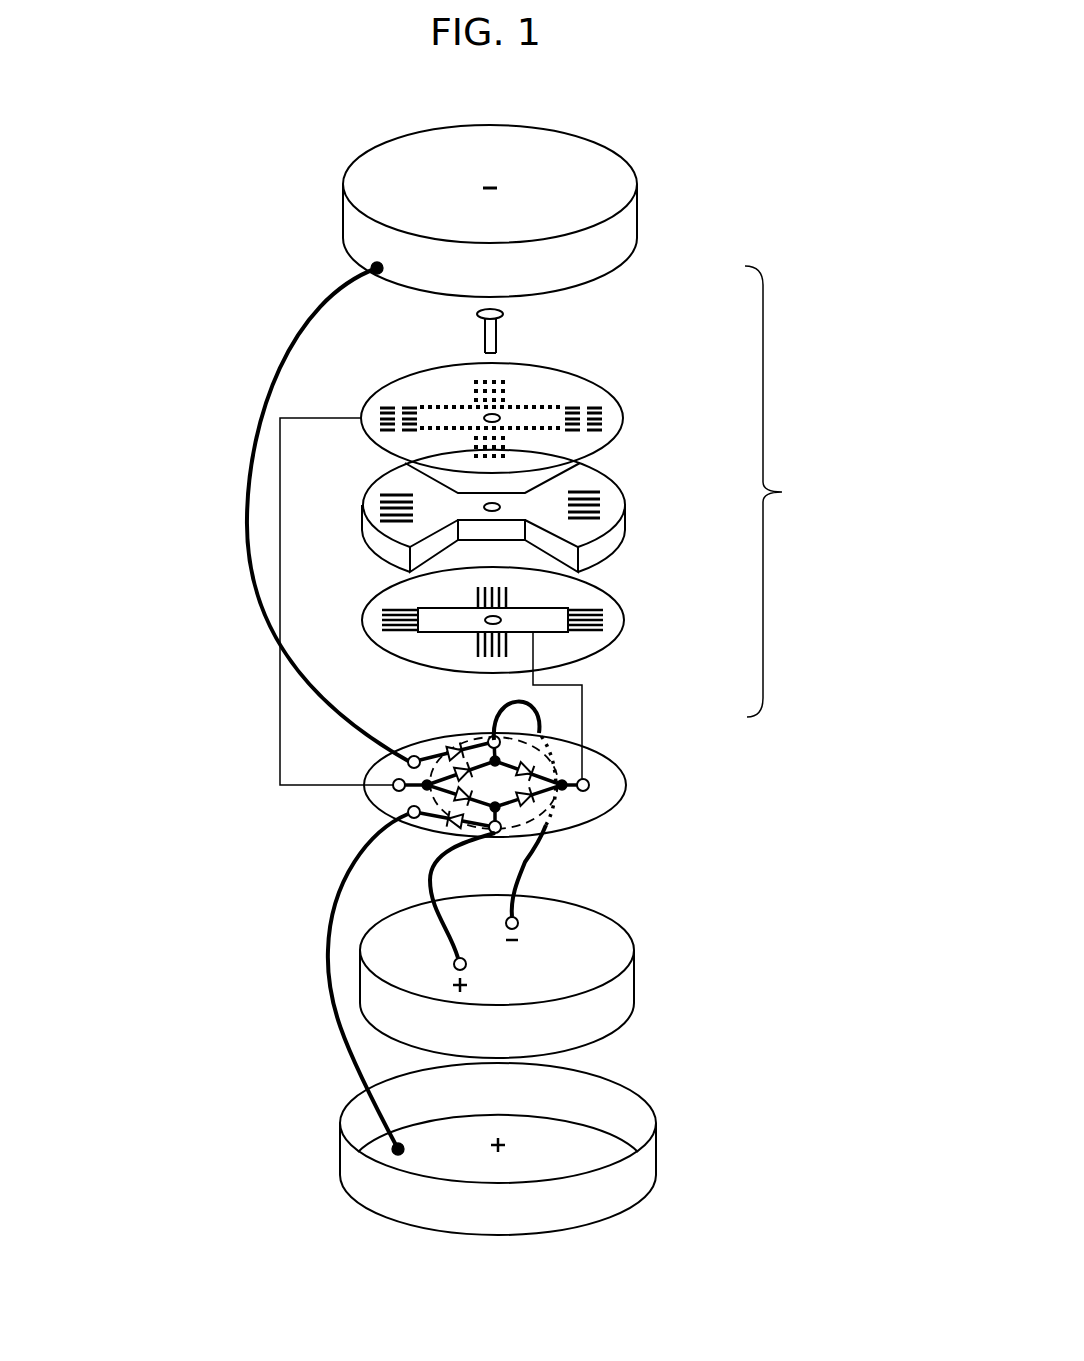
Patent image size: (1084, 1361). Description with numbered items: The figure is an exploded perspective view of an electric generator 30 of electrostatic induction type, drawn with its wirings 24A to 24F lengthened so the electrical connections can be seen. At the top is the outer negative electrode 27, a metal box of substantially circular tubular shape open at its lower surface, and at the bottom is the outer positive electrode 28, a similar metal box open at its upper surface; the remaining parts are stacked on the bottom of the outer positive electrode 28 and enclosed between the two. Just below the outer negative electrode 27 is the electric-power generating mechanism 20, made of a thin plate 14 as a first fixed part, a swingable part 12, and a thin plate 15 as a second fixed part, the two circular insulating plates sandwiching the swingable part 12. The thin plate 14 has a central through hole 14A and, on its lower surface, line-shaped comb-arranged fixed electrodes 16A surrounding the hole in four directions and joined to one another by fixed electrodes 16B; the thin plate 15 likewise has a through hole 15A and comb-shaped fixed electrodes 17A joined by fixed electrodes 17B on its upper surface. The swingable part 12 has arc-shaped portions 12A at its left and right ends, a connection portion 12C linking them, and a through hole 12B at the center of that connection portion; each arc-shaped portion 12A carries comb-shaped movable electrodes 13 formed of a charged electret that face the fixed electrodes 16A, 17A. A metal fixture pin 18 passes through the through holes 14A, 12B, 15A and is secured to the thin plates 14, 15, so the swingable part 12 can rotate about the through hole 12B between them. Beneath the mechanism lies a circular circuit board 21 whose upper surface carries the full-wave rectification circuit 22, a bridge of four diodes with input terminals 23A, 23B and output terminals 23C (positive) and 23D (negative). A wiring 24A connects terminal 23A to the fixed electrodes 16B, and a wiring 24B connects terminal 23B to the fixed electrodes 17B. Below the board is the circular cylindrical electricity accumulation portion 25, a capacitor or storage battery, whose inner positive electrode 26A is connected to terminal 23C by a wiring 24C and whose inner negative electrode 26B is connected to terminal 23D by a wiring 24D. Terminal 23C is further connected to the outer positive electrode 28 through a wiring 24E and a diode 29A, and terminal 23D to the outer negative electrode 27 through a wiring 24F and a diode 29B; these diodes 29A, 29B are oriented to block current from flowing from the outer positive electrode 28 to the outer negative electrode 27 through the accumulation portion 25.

The electric generator 30 is at (677, 100).
The outer negative electrode 27 is at (627, 162).
The fixture pin 18 is at (497, 334).
The thin plate 14 is at (625, 417).
The through hole 14A is at (487, 416).
The fixed electrodes 16A is at (600, 406).
The fixed electrodes 16B is at (545, 406).
The swingable part 12 is at (608, 472).
The arc-shaped portions 12A is at (606, 495).
The through hole 12B is at (502, 510).
The connection portion 12C is at (517, 502).
The movable electrodes 13 is at (600, 508).
The thin plate 15 is at (627, 622).
The through hole 15A is at (437, 608).
The fixed electrodes 17A is at (593, 628).
The fixed electrodes 17B is at (553, 633).
The electric-power generating mechanism 20 is at (778, 491).
The circuit board 21 is at (626, 779).
The full-wave rectification circuit 22 is at (530, 810).
The terminal 23A is at (395, 790).
The terminal 23B is at (588, 789).
The terminal 23C is at (500, 831).
The terminal 23D is at (490, 739).
The diode 29A is at (448, 821).
The diode 29B is at (448, 750).
The wiring 24A is at (280, 694).
The wiring 24B is at (583, 727).
The wiring 24C is at (428, 880).
The wiring 24D is at (520, 883).
The wiring 24E is at (329, 992).
The wiring 24F is at (247, 506).
The electricity accumulation portion 25 is at (617, 1025).
The inner positive electrode 26A is at (467, 967).
The inner negative electrode 26B is at (519, 926).
The outer positive electrode 28 is at (635, 1205).